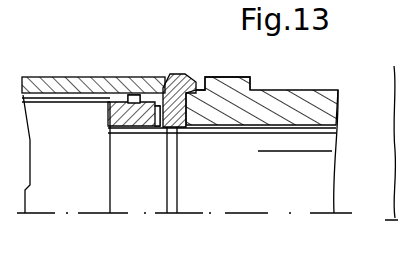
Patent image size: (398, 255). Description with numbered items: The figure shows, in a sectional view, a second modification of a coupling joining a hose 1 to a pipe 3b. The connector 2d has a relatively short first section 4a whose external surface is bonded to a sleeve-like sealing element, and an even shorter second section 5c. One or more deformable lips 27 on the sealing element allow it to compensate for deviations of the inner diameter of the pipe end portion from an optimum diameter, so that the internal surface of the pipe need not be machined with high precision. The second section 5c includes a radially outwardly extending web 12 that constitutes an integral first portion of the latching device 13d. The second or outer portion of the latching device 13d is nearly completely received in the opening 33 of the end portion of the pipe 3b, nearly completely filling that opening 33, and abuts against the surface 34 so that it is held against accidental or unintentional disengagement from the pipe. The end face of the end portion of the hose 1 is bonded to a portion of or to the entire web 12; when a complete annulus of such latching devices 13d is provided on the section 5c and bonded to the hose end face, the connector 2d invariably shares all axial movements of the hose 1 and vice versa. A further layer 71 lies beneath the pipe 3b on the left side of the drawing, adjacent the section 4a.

The hose 1 is at (305, 88).
The pipe 3b is at (62, 76).
The lip 27 is at (148, 100).
The opening 33 is at (178, 74).
The latching device 13d is at (197, 80).
The insert layer 71 is at (110, 108).
The first section 4a is at (113, 132).
The connector 2d is at (146, 128).
The second section 5c is at (163, 128).
The web 12 is at (192, 128).
The surface 34 is at (224, 122).